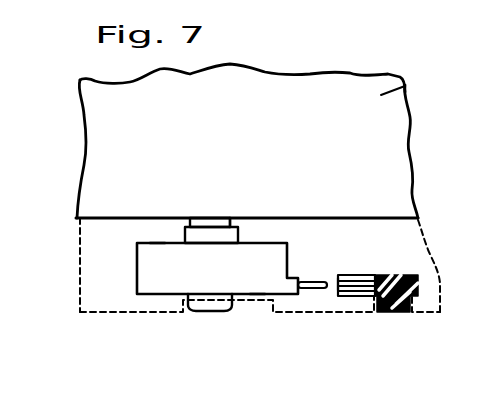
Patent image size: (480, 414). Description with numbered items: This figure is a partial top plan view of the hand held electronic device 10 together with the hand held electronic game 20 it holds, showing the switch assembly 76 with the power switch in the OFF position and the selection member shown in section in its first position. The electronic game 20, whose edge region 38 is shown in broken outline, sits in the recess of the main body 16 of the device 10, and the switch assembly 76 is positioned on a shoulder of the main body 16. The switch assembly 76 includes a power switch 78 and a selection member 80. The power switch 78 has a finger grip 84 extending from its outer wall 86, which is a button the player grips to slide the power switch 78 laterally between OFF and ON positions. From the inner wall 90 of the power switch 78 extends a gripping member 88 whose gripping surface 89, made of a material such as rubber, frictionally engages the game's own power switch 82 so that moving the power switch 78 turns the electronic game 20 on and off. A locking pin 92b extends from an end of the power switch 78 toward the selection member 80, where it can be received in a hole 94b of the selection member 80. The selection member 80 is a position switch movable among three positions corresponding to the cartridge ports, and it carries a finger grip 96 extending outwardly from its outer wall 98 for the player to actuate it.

The hand held electronic device 10 is at (74, 297).
The main body 16 is at (77, 240).
The hand held electronic game 20 is at (338, 74).
The edge of panel 38 is at (410, 86).
The switch assembly 76 is at (138, 304).
The power switch 78 is at (150, 268).
The selection member 80 is at (419, 283).
The power switch of game 82 is at (208, 224).
The finger grip 84 is at (190, 312).
The outer wall 86 is at (257, 294).
The gripping member 88 is at (190, 236).
The gripping surface 89 is at (236, 227).
The inner wall 90 is at (157, 243).
The pin 92b is at (313, 281).
The hole 94b is at (339, 282).
The finger grip 96 is at (390, 312).
The outer wall 98 is at (355, 297).